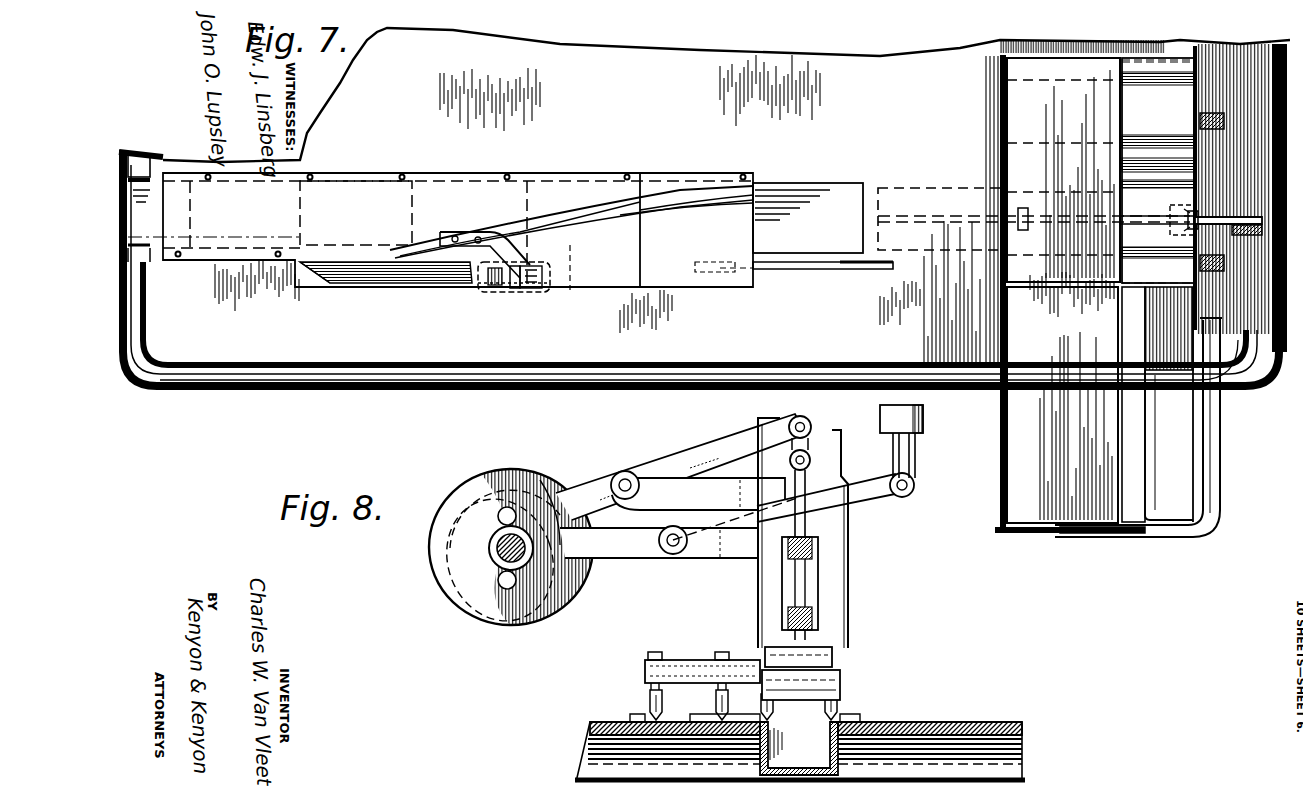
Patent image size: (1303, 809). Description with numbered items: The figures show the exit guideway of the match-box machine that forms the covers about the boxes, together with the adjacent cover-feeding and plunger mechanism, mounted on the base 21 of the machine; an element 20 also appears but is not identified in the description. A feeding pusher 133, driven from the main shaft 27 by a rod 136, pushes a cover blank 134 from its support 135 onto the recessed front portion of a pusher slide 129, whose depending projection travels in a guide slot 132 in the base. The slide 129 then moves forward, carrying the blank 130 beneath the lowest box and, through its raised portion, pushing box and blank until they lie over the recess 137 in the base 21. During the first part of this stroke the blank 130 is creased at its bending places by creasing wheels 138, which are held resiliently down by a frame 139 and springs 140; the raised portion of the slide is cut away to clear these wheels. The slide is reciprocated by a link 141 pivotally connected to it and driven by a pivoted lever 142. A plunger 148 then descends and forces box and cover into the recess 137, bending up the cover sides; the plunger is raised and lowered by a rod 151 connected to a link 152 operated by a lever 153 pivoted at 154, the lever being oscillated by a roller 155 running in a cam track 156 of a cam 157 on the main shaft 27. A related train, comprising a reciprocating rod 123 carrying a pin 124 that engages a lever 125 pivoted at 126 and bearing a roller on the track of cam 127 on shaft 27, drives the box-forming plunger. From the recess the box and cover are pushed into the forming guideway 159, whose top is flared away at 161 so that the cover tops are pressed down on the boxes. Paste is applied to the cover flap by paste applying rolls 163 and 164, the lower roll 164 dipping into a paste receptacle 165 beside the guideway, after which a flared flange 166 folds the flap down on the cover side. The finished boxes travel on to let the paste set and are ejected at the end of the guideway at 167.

In FIG. 7, the housing wall (broken away) 20 is at (664, 211).
In FIG. 8, the base 21 is at (962, 718).
In FIG. 8, the main shaft 27 is at (490, 552).
In FIG. 8, the reciprocating rod 123 is at (925, 420).
In FIG. 8, the pin 124 is at (906, 495).
In FIG. 8, the lever 125 is at (868, 505).
In FIG. 8, the pivot 126 is at (676, 554).
In FIG. 8, the cam 127 is at (558, 622).
In FIG. 7, the pusher slide 129 is at (1180, 104).
In FIG. 8, the pusher slide 129 is at (842, 692).
In FIG. 7, the cover blank 130 is at (1003, 268).
In FIG. 7, the guide slot 132 is at (1128, 218).
In FIG. 7, the feeding pusher 133 is at (1112, 533).
In FIG. 7, the cover blank 134 is at (1070, 407).
In FIG. 7, the support 135 is at (1145, 448).
In FIG. 7, the rod 136 is at (1222, 455).
In FIG. 7, the recess 137 is at (925, 198).
In FIG. 8, the recess 137 is at (799, 748).
In FIG. 8, the creasing wheels 138 is at (835, 700).
In FIG. 8, the frame 139 is at (678, 660).
In FIG. 8, the springs 140 is at (745, 645).
In FIG. 7, the link 141 is at (1228, 215).
In FIG. 7, the lever 142 is at (1250, 237).
In FIG. 8, the plunger 148 is at (840, 648).
In FIG. 8, the rod 151 is at (810, 580).
In FIG. 8, the link 152 is at (812, 426).
In FIG. 8, the lever 153 is at (710, 440).
In FIG. 8, the pivot 154 is at (622, 472).
In FIG. 8, the roller 155 is at (505, 508).
In FIG. 8, the cam track 156 is at (483, 528).
In FIG. 8, the cam 157 is at (520, 475).
In FIG. 7, the forming guideway 159 is at (823, 226).
In FIG. 7, the flared portion 161 is at (571, 222).
In FIG. 7, the paste applying roll 163 is at (502, 292).
In FIG. 7, the paste applying roll 164 is at (528, 290).
In FIG. 7, the paste receptacle 165 is at (555, 292).
In FIG. 7, the flared flange 166 is at (448, 284).
In FIG. 7, the guideway end 167 is at (163, 245).